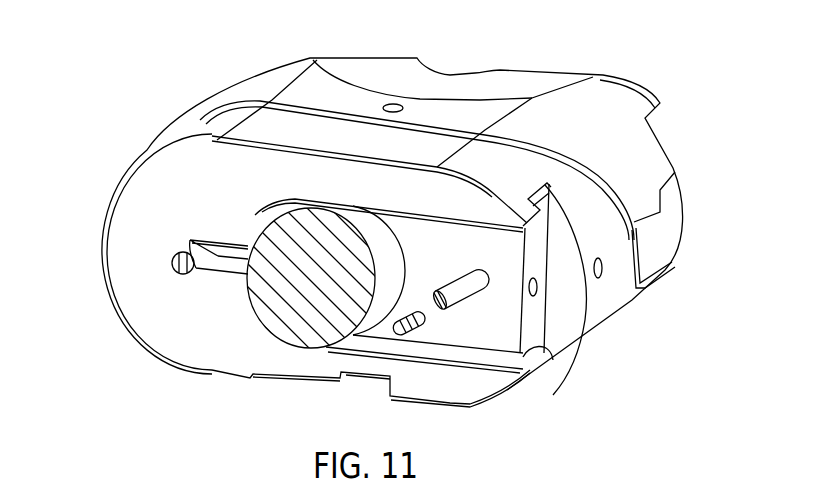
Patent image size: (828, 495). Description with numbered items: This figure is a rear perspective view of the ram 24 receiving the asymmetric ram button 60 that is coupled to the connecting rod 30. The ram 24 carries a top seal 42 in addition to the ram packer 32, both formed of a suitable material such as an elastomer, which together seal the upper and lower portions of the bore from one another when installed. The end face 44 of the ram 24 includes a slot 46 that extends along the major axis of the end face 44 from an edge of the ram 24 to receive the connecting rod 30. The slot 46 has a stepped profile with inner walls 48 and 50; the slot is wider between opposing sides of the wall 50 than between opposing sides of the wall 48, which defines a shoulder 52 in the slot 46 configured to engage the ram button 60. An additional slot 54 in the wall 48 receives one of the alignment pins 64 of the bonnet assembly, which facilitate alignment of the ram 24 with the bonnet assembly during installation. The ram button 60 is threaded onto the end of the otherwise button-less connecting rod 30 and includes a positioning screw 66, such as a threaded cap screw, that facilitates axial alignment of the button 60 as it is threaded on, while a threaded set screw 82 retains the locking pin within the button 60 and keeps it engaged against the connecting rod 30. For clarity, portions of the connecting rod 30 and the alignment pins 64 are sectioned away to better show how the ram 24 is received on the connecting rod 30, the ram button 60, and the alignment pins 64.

The ram 24 is at (307, 61).
The top seal 42 is at (228, 96).
The ram packer 32 is at (672, 207).
The end face 44 is at (120, 253).
The ram button 60 is at (537, 243).
The set screw 82 is at (540, 285).
The slot 46 is at (553, 313).
The shoulder 52 is at (548, 183).
The inner wall 50 is at (553, 360).
The inner wall 48 is at (487, 354).
The connecting rod 30 is at (287, 335).
The additional slot 54 is at (229, 265).
The alignment pin 64 is at (183, 275).
The positioning screw 66 is at (425, 312).